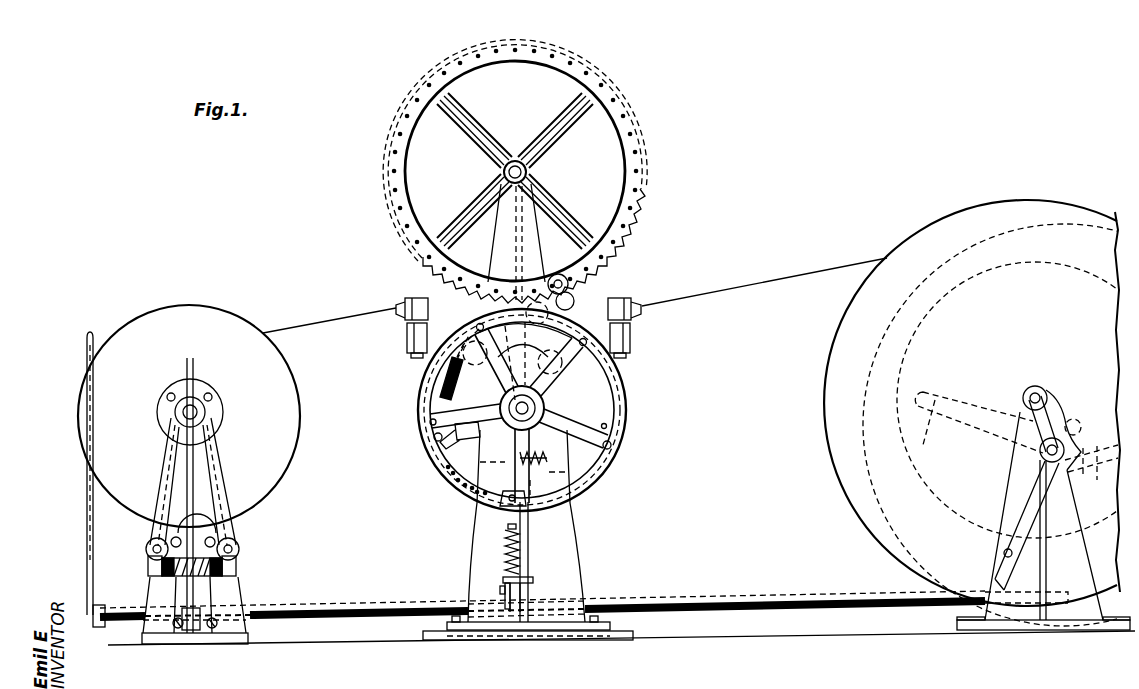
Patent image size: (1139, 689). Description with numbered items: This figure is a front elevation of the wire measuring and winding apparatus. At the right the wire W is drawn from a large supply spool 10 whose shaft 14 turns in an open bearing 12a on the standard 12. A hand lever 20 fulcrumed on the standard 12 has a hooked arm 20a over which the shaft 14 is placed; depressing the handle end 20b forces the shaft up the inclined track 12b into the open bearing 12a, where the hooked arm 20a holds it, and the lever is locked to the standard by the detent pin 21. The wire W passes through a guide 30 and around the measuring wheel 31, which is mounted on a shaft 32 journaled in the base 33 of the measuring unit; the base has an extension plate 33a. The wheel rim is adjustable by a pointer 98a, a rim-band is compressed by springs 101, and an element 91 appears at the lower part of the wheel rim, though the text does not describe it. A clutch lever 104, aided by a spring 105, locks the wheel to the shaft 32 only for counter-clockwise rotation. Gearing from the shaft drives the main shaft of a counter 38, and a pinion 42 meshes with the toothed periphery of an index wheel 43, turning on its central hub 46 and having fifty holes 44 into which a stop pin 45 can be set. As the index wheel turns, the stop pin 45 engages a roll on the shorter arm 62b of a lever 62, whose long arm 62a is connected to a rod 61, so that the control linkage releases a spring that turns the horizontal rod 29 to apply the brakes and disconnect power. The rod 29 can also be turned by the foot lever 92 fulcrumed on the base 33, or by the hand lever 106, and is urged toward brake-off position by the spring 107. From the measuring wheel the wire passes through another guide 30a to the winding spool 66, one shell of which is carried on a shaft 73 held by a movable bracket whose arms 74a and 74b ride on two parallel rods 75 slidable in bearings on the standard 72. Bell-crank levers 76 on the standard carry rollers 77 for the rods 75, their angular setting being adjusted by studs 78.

The supply spool 10 is at (1003, 212).
The standard 12 is at (1080, 550).
The open bearing 12a is at (1023, 405).
The inclined track 12b is at (1060, 410).
The shaft 14 is at (1024, 392).
The hand lever 20 is at (1022, 478).
The hooked arm 20a is at (1040, 390).
The handle end 20b is at (979, 422).
The detent pin 21 is at (1004, 553).
The horizontal rod 29 is at (745, 594).
The guide 30 is at (628, 298).
The guide 30a is at (414, 297).
The measuring wheel 31 is at (640, 413).
The shaft 32 is at (540, 406).
The base 33 is at (568, 554).
The extension plate 33a is at (497, 243).
The counter 38 is at (592, 380).
The pinion 42 is at (472, 304).
The index wheel 43 is at (640, 138).
The holes 44 is at (653, 220).
The stop pin 45 is at (559, 274).
The hub 46 is at (527, 172).
The rod 61 is at (460, 365).
The lever 62 is at (525, 349).
The long arm 62a is at (497, 361).
The shorter arm 62b is at (576, 297).
The winding spool 66 is at (150, 312).
The standard 72 is at (236, 602).
The shaft 73 is at (183, 412).
The bracket arm 74a is at (230, 522).
The bracket arm 74b is at (160, 520).
The parallel rods 75 is at (147, 550).
The bell-crank levers 76 is at (160, 595).
The rollers 77 is at (148, 566).
The studs 78 is at (210, 628).
The stop 91 is at (470, 490).
The foot lever 92 is at (505, 580).
The pointer 98a is at (450, 470).
The springs 101 is at (423, 388).
The clutch lever 104 is at (600, 462).
The spring 105 is at (526, 473).
The hand lever 106 is at (85, 338).
The spring 107 is at (505, 548).
The wire W is at (575, 295).